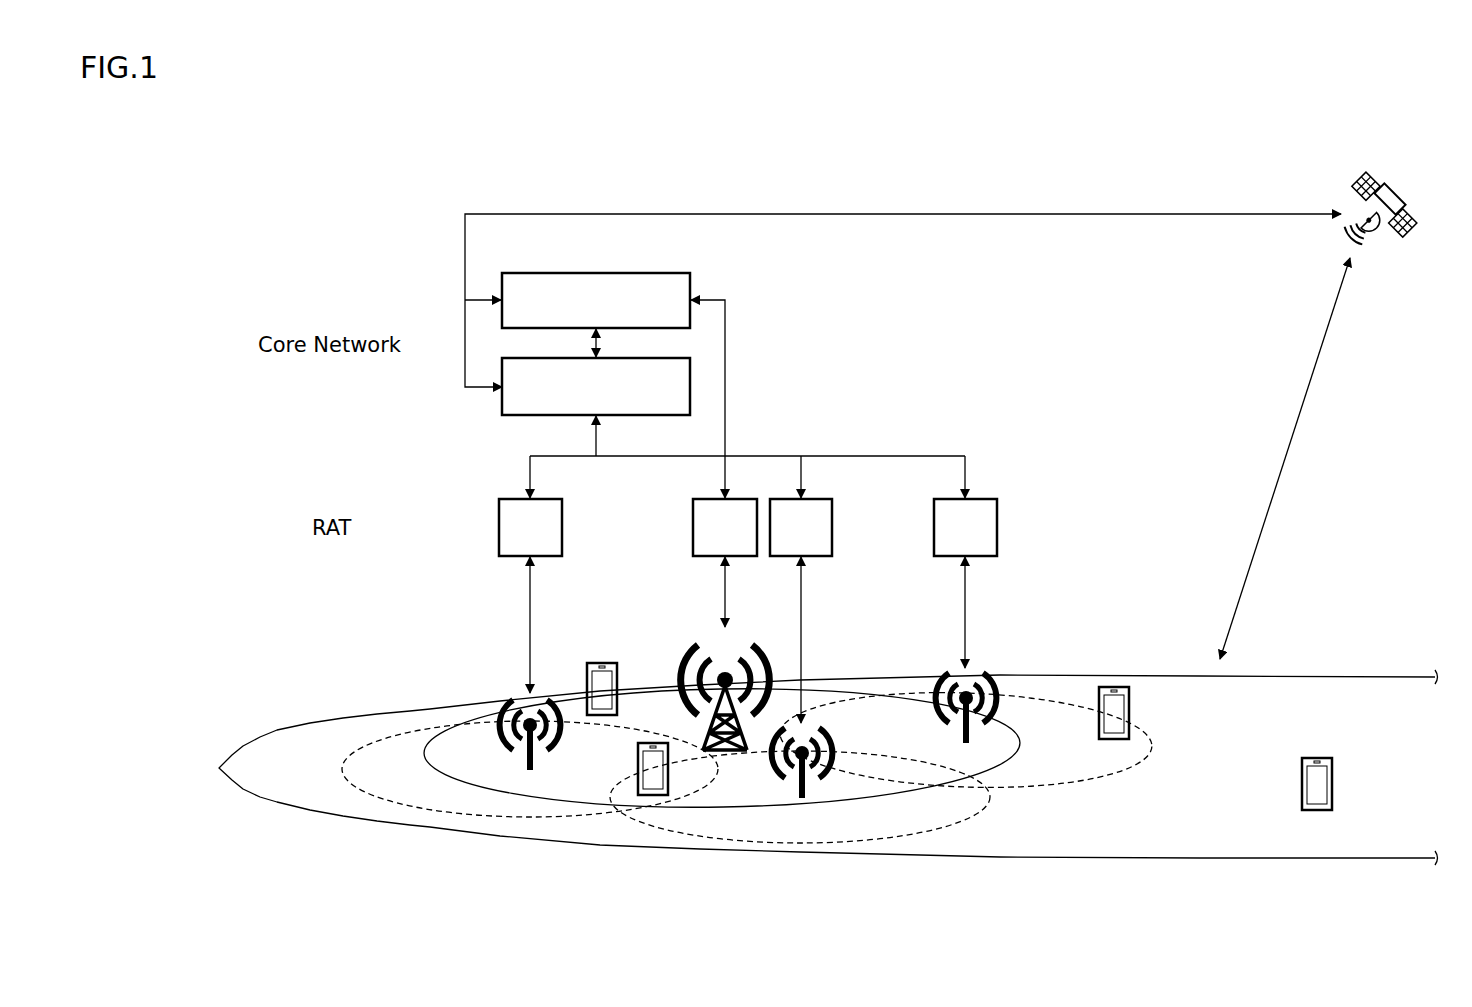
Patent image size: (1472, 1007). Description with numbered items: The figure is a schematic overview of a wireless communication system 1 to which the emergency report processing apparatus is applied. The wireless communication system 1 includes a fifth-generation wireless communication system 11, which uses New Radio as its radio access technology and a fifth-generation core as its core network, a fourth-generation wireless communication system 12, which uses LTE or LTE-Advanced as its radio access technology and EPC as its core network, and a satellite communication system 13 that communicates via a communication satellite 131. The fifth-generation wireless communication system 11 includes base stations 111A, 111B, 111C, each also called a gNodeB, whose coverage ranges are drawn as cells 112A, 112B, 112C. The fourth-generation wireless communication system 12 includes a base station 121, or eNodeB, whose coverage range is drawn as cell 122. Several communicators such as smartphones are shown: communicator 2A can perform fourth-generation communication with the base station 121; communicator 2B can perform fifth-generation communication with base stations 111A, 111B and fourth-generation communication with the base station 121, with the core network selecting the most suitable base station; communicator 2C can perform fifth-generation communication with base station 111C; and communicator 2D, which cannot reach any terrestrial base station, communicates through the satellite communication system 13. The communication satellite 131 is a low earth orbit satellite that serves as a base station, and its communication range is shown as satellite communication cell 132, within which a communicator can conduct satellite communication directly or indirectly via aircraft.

The wireless communication system 1 is at (985, 166).
The 5G wireless communication system 11 is at (932, 442).
The 4G wireless communication system 12 is at (762, 342).
The satellite communication system 13 is at (1275, 186).
The communication satellite 131 is at (1405, 190).
The satellite communication cell 132 is at (1367, 677).
The 5G base station 111A is at (498, 712).
The 5G base station 111B is at (833, 742).
The 5G base station 111C is at (1002, 687).
The cell 112A is at (422, 808).
The cell 112B is at (925, 832).
The cell 112C is at (1113, 777).
The 4G base station 121 is at (777, 653).
The cell 122 is at (823, 693).
The communicator 2A is at (603, 663).
The communicator 2B is at (653, 743).
The communicator 2C is at (1112, 687).
The communicator 2D is at (1316, 758).